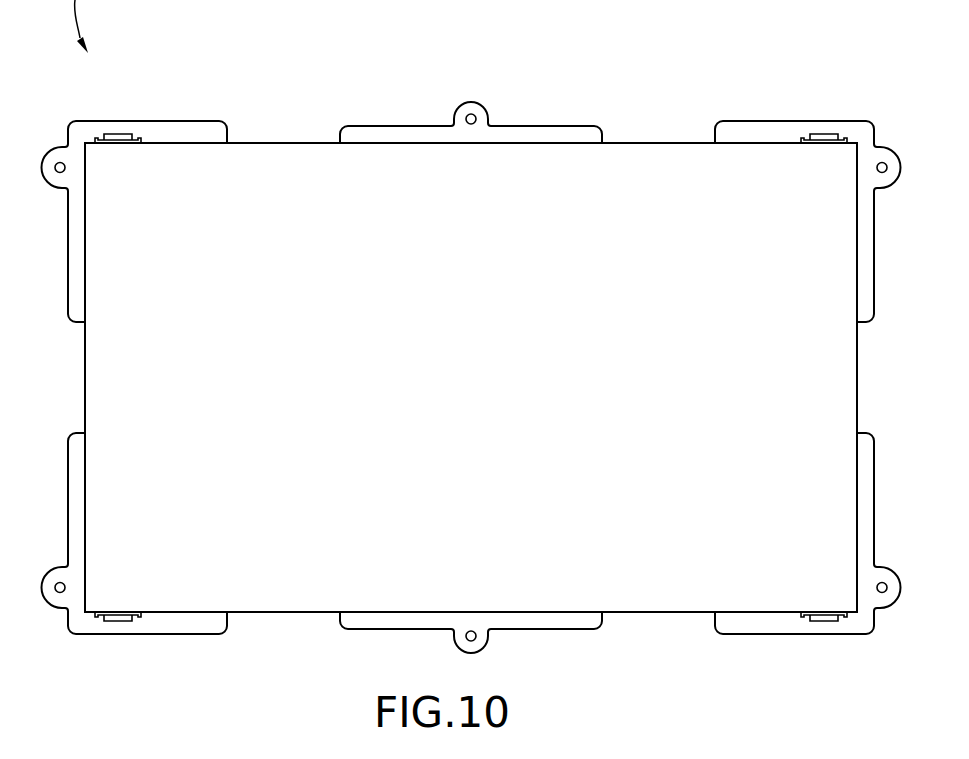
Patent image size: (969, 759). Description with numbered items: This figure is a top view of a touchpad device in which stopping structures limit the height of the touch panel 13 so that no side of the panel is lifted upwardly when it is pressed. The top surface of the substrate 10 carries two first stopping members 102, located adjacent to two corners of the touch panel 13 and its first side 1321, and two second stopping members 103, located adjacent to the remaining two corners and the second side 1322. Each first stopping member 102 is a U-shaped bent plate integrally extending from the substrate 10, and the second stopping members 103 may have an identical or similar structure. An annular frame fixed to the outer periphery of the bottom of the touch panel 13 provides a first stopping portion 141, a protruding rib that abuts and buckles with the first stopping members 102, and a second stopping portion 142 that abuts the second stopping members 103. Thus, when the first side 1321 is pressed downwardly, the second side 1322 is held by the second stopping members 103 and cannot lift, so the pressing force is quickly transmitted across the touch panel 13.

The substrate 10 is at (183, 130).
The touch panel 13 is at (288, 142).
The first side 1321 is at (112, 386).
The second side 1322 is at (838, 388).
The first stopping member 102 is at (122, 132).
The second stopping member 103 is at (805, 138).
The first stopping portion 141 is at (112, 144).
The second stopping portion 142 is at (827, 144).